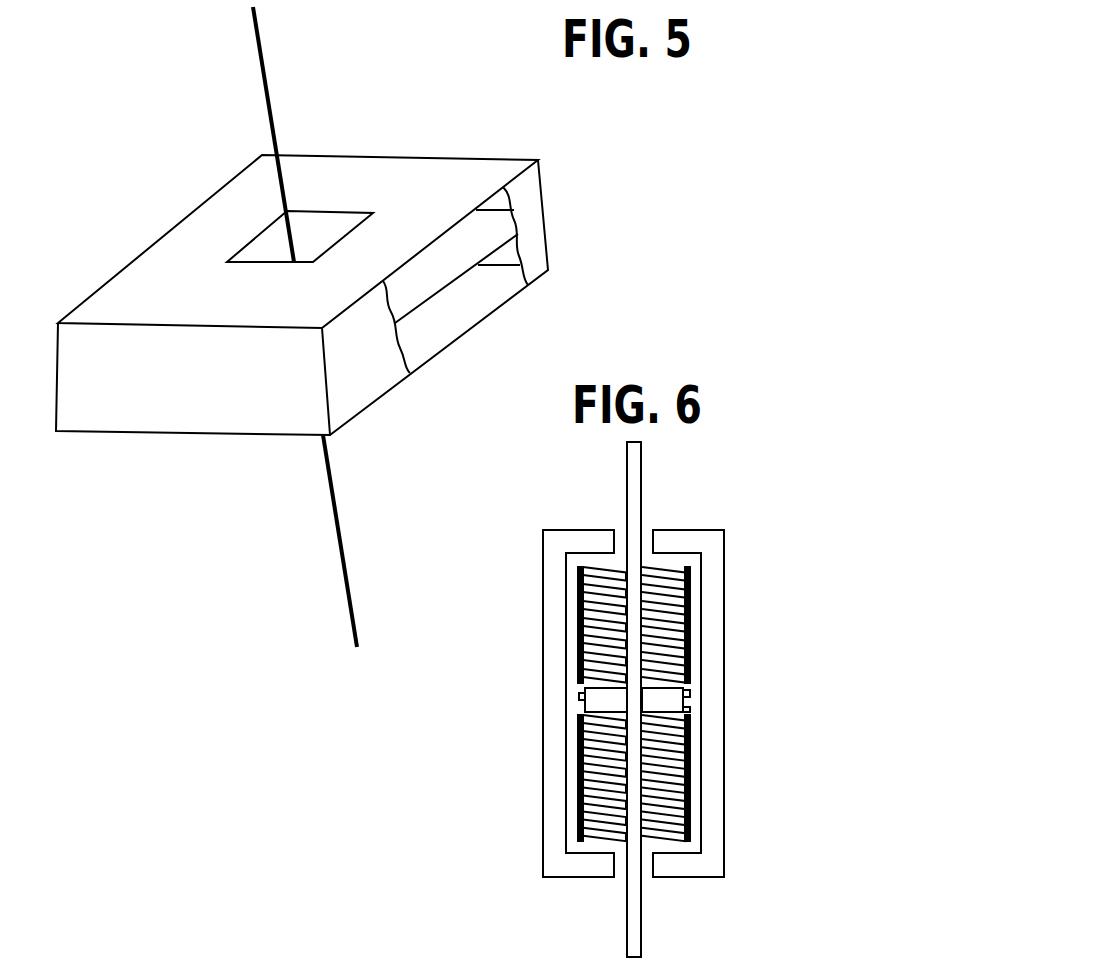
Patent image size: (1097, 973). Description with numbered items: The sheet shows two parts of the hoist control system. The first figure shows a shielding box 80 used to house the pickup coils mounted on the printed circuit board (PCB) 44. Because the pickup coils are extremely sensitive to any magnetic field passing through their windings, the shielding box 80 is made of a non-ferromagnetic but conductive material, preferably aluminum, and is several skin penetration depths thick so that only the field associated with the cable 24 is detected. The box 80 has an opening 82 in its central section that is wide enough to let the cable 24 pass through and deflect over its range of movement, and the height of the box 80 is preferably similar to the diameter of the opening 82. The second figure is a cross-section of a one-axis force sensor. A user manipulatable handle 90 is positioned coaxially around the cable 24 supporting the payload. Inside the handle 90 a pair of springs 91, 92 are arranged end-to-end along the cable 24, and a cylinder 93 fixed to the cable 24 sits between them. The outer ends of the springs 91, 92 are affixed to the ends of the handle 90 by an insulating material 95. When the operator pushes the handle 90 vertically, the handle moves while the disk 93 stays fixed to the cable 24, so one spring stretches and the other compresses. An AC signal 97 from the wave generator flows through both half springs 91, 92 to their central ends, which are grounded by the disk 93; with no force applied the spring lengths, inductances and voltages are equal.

In FIG. 5, the cable 24 is at (310, 327).
In FIG. 6, the cable 24 is at (627, 480).
In FIG. 5, the shielding box 80 is at (424, 142).
In FIG. 5, the opening 82 is at (329, 242).
In FIG. 5, the printed circuit board 44 is at (457, 266).
In FIG. 6, the insulating material 95 is at (543, 598).
In FIG. 6, the handle 90 is at (543, 733).
In FIG. 6, the spring 91 is at (580, 627).
In FIG. 6, the spring 92 is at (542, 920).
In FIG. 6, the cylinder 93 is at (776, 671).
In FIG. 6, the AC signal 97 is at (668, 568).